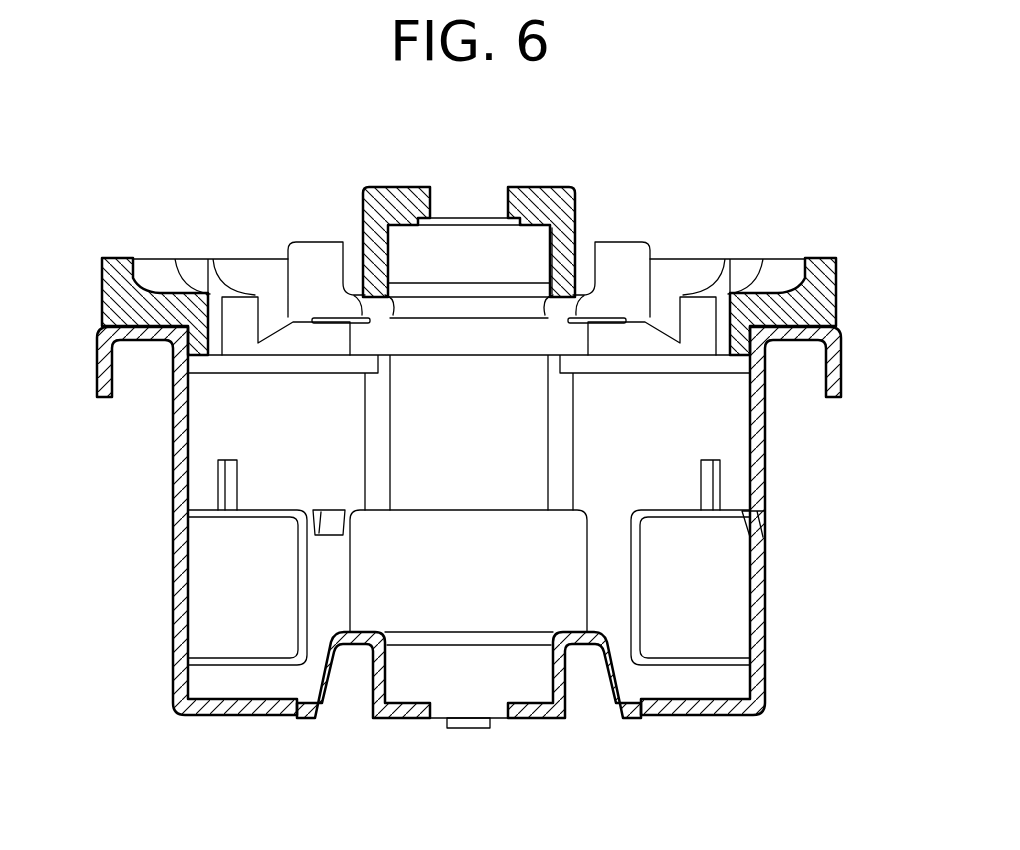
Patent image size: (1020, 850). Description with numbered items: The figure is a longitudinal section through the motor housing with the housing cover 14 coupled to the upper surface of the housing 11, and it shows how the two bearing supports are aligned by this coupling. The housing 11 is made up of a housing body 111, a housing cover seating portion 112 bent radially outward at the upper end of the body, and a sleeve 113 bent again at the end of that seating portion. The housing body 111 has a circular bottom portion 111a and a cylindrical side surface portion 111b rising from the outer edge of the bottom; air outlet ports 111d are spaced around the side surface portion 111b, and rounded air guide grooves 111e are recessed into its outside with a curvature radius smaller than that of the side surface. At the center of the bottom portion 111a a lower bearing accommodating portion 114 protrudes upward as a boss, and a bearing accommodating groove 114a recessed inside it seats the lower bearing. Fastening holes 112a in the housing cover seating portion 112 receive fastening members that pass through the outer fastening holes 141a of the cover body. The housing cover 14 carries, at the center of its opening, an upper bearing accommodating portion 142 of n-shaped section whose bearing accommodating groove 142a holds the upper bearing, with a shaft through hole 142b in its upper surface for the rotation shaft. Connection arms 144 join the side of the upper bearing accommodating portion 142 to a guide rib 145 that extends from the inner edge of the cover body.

The housing cover 14 is at (104, 238).
The outer fastening hole 141a is at (178, 300).
The upper bearing accommodating portion 142 is at (575, 205).
The bearing accommodating groove 142a is at (532, 256).
The shaft through hole 142b is at (478, 203).
The connection arm 144 is at (663, 281).
The guide rib 145 is at (792, 300).
The housing 11 is at (153, 493).
The housing body 111 is at (880, 507).
The bottom portion 111a is at (760, 608).
The side surface portion 111b is at (762, 486).
The air outlet port 111d is at (303, 588).
The air guide groove 111e is at (478, 490).
The housing cover seating portion 112 is at (793, 334).
The fastening hole 112a is at (113, 340).
The sleeve 113 is at (832, 382).
The lower bearing accommodating portion 114 is at (326, 673).
The bearing accommodating groove 114a is at (416, 683).